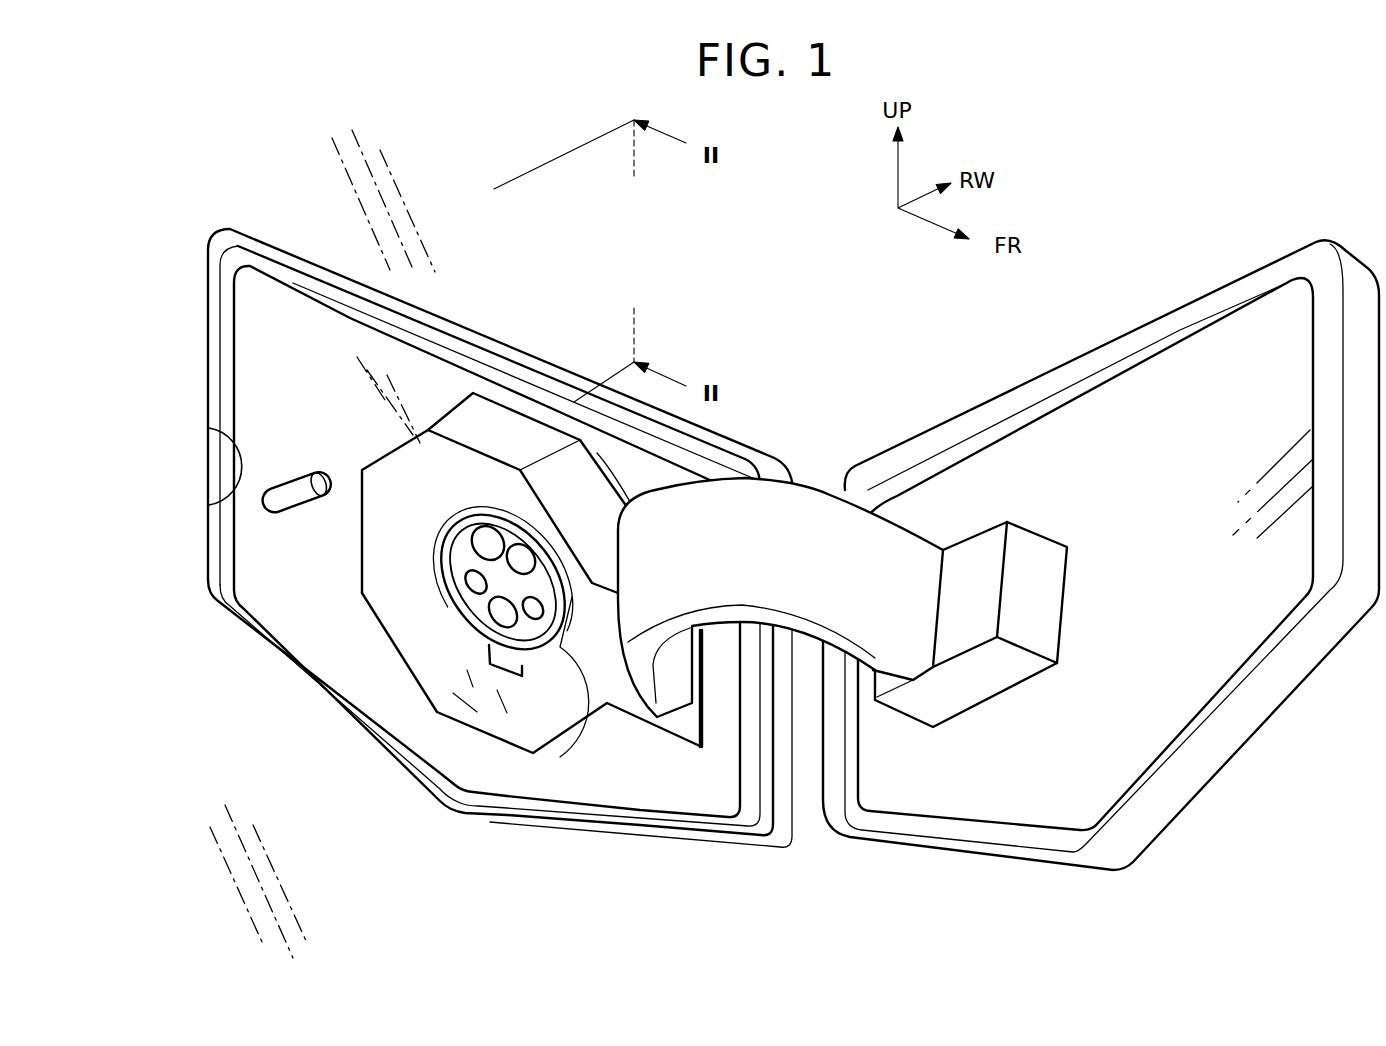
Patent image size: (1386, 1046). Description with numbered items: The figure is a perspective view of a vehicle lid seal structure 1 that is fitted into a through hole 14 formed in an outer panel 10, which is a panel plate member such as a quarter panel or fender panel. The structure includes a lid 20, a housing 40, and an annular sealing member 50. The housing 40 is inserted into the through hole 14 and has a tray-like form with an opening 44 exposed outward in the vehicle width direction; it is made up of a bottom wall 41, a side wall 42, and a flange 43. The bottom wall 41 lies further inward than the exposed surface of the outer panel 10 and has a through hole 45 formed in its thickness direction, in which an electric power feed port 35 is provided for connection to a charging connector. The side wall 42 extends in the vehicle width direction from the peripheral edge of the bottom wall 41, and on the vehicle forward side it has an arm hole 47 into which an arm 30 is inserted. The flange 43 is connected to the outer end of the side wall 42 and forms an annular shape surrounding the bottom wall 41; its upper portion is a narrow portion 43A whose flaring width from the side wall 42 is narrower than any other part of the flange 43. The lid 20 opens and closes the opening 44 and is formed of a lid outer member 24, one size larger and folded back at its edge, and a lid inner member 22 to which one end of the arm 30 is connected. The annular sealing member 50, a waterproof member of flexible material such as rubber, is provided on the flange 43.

The vehicle lid seal structure 1 is at (467, 143).
The outer panel 10 is at (691, 880).
The through hole 14 is at (224, 500).
The lid 20 is at (1153, 303).
The lid inner member 22 is at (1097, 420).
The lid outer member 24 is at (1240, 287).
The arm 30 is at (910, 550).
The electric power feed port 35 is at (494, 547).
The housing 40 is at (289, 333).
The bottom wall 41 is at (393, 590).
The side wall 42 is at (597, 503).
The flange 43 is at (293, 413).
The narrow portion 43A is at (493, 433).
The opening 44 is at (427, 638).
The through hole 45 is at (690, 672).
The arm hole 47 is at (615, 704).
The annular sealing member 50 is at (243, 255).